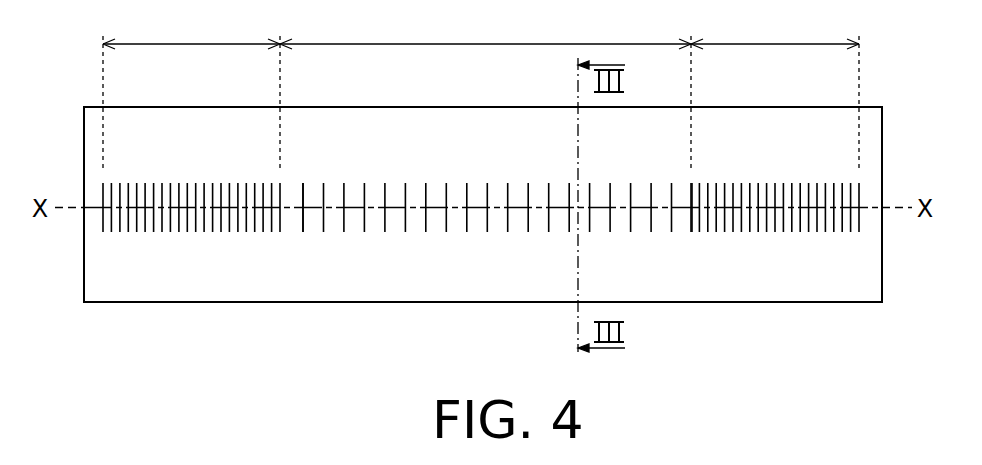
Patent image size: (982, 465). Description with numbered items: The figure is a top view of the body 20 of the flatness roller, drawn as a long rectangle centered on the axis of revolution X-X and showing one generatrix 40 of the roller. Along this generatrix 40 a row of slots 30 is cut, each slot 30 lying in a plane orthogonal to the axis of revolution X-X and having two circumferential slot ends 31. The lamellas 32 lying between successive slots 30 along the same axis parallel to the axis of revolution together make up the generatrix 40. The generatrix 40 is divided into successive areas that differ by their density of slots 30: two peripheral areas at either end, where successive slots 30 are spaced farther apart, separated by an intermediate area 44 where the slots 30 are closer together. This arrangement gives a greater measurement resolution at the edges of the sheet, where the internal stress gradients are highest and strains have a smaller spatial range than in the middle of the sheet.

The base member 20 is at (713, 308).
The slot 30 is at (323, 185).
The circumferential slot end 31 is at (447, 184).
The lamella 32 is at (310, 222).
The generatrix 40 is at (895, 153).
The intermediate area 44 is at (491, 125).